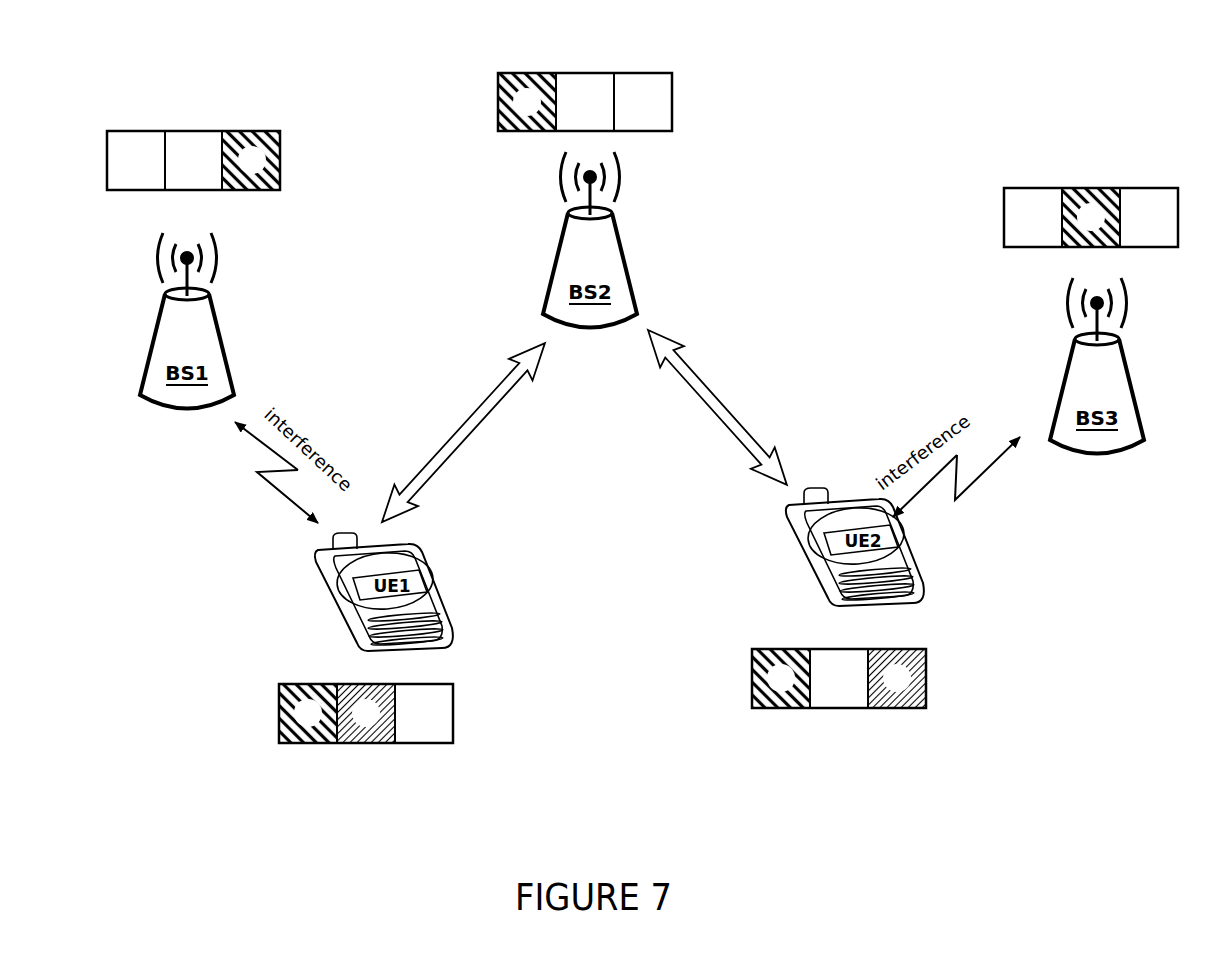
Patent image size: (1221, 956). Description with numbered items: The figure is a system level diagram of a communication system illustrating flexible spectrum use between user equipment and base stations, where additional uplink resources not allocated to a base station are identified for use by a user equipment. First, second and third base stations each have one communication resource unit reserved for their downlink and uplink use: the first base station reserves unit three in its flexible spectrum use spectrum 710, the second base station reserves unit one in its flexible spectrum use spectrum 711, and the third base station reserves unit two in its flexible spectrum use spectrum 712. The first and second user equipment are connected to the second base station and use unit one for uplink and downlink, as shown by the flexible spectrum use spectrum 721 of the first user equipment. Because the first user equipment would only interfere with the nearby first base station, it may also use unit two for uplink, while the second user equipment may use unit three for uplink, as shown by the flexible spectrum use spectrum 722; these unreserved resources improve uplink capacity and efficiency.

The flexible spectrum use spectrum 710 is at (155, 121).
The flexible spectrum use spectrum 711 is at (569, 61).
The flexible spectrum use spectrum 712 is at (1074, 176).
The flexible spectrum use spectrum 721 is at (281, 673).
The flexible spectrum use spectrum 722 is at (764, 639).